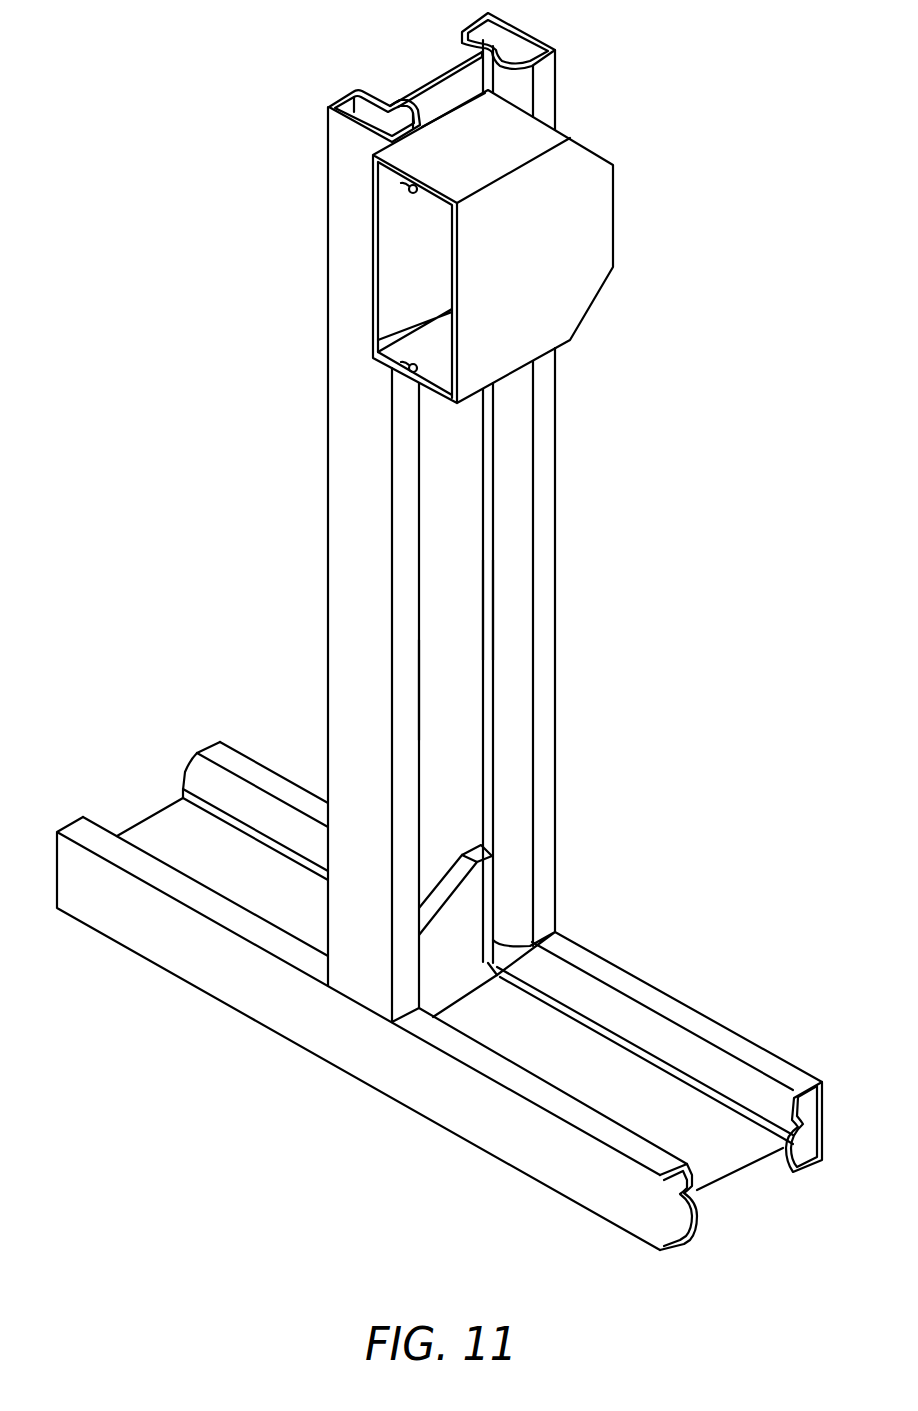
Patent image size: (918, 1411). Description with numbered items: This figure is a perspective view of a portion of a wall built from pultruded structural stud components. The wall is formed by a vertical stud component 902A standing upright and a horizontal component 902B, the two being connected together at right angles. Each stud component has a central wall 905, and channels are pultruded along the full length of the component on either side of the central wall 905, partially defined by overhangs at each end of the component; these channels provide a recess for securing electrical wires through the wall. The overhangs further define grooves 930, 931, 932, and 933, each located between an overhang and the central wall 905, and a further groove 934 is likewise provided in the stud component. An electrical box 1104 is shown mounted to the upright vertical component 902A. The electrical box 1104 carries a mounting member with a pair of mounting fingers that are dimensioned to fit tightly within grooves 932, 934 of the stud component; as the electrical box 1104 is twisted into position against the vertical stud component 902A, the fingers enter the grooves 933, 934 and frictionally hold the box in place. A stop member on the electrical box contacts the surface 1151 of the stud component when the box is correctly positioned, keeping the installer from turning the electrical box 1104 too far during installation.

The vertical stud component 902A is at (337, 532).
The horizontal component 902B is at (340, 1048).
The central wall 905 is at (465, 525).
The groove 930 is at (696, 1168).
The groove 931 is at (787, 1125).
The groove 932 is at (397, 103).
The groove 933 is at (487, 613).
The groove 934 is at (420, 693).
The electrical box 1104 is at (578, 302).
The surface 1151 is at (440, 77).